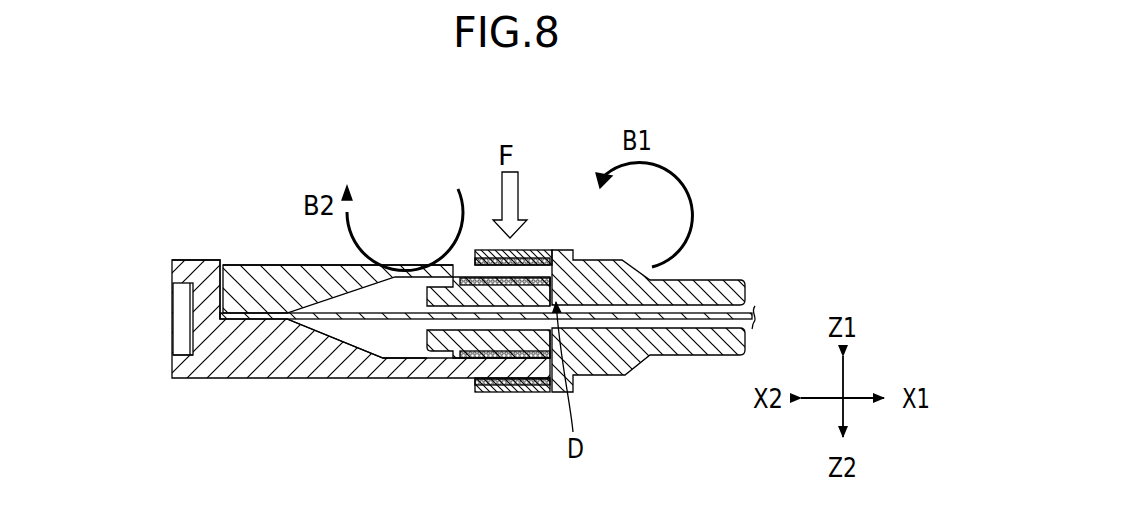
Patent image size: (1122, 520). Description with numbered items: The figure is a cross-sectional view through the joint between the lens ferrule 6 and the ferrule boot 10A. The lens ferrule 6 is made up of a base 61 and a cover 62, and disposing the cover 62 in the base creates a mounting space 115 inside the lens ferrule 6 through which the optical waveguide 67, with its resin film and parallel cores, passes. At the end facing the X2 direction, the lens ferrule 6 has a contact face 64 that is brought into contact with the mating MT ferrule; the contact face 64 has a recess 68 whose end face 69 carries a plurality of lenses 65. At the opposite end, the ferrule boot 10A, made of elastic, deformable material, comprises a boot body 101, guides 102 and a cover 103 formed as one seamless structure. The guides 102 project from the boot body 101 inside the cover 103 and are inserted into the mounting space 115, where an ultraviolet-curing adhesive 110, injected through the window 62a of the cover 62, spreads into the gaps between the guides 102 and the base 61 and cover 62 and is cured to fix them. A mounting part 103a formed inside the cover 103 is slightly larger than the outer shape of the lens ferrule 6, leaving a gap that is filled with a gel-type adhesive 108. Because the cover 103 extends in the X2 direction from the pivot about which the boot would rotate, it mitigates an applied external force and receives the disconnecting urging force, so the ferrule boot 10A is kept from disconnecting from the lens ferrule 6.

The lens ferrule 6 is at (283, 142).
The base 61 is at (254, 388).
The cover 62 is at (259, 262).
The window 62a is at (378, 265).
The contact face 64 is at (172, 272).
The lenses 65 is at (190, 320).
The optical waveguide 67 is at (355, 320).
The recess 68 is at (185, 352).
The end face 69 is at (193, 300).
The boot body 101 is at (723, 290).
The guides 102 is at (438, 290).
The cover 103 is at (540, 279).
The mounting part 103a is at (520, 255).
The adhesive 108 is at (485, 256).
The adhesive 110 is at (560, 272).
The mounting space 115 is at (385, 345).
The ferrule boot 10A is at (681, 291).